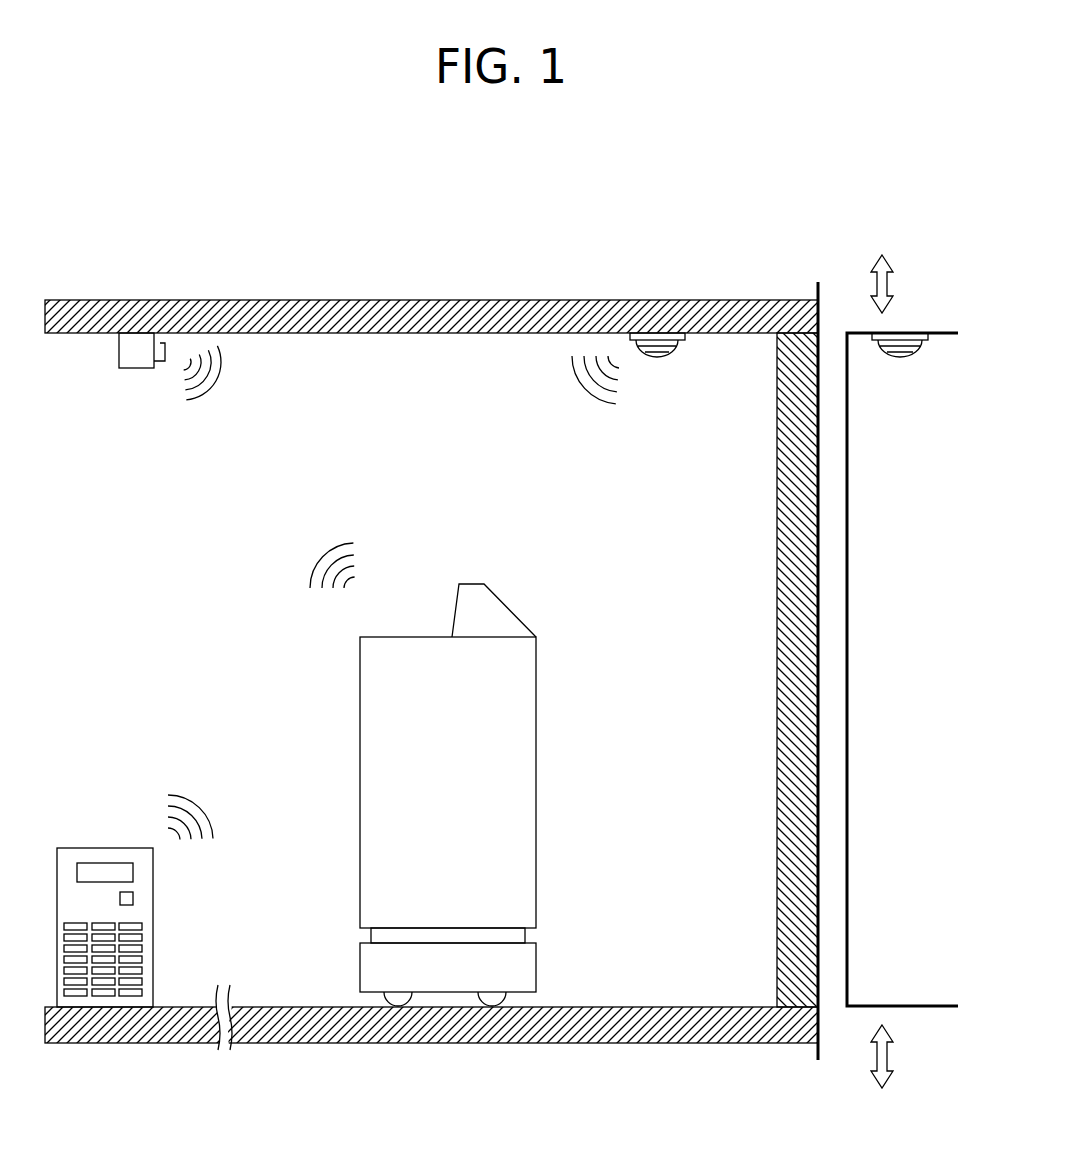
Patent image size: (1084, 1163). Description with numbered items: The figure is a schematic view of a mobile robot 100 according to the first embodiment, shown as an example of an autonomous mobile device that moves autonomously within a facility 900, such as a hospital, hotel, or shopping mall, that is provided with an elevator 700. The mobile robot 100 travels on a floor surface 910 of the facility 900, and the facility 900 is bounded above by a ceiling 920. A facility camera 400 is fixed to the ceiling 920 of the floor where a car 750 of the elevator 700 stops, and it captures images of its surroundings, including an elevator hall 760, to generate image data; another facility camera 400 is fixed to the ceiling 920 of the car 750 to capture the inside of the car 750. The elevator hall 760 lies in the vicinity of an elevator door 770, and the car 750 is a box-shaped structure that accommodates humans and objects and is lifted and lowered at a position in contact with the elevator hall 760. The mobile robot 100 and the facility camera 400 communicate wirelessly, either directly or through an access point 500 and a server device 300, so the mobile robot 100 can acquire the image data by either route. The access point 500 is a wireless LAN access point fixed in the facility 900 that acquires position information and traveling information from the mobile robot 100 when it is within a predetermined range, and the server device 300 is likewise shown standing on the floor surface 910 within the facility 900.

The mobile robot 100 is at (287, 679).
The server device 300 is at (112, 848).
The facility camera 400 is at (675, 353).
The access point 500 is at (140, 369).
The elevator 700 is at (831, 270).
The car 750 is at (883, 512).
The elevator hall 760 is at (694, 742).
The elevator door 770 is at (778, 604).
The facility 900 is at (431, 613).
The floor surface 910 is at (298, 1007).
The ceiling 920 is at (533, 334).